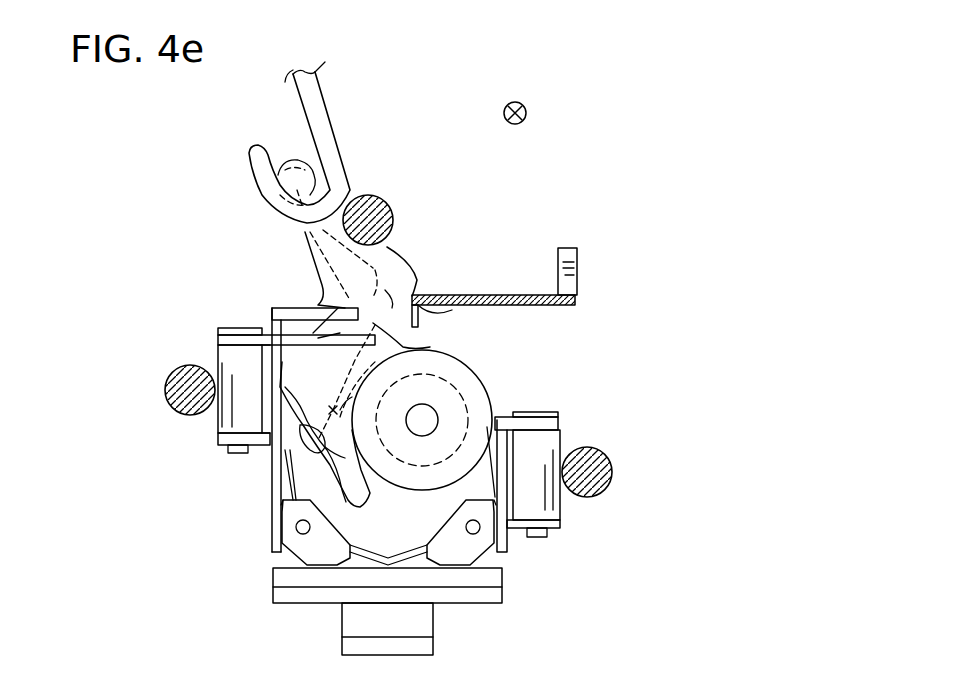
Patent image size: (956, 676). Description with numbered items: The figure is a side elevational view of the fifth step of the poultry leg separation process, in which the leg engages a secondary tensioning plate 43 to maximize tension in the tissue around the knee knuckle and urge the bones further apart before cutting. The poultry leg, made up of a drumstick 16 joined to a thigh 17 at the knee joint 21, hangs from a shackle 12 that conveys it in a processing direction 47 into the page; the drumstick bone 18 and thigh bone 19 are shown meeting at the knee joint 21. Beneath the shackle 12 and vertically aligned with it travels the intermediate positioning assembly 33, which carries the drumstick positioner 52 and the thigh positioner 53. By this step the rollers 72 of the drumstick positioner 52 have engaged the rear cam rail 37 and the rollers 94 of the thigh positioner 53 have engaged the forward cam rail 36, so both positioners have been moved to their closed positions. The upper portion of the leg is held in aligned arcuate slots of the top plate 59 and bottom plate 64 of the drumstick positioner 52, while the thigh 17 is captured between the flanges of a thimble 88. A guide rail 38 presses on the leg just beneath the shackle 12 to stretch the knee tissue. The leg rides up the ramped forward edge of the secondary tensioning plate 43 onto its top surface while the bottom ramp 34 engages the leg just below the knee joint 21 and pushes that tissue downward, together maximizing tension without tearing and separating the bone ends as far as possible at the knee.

The shackle 12 is at (331, 112).
The drumstick 16 is at (395, 252).
The thigh 17 is at (367, 503).
The drumstick bone 18 is at (327, 240).
The thigh bone 19 is at (331, 406).
The knee joint 21 is at (392, 317).
The intermediate positioning assembly 33 is at (493, 208).
The bottom ramp 34 is at (457, 292).
The forward cam rail 36 is at (609, 461).
The rear cam rail 37 is at (167, 388).
The guide rail 38 is at (391, 197).
The secondary tensioning plate 43 is at (510, 292).
The processing direction 47 is at (527, 107).
The drumstick positioner 52 is at (193, 333).
The thigh positioner 53 is at (580, 427).
The top plate 59 is at (297, 308).
The bottom plate 64 is at (340, 333).
The rollers 72 is at (245, 415).
The thimble 88 is at (487, 390).
The rollers 94 is at (530, 490).